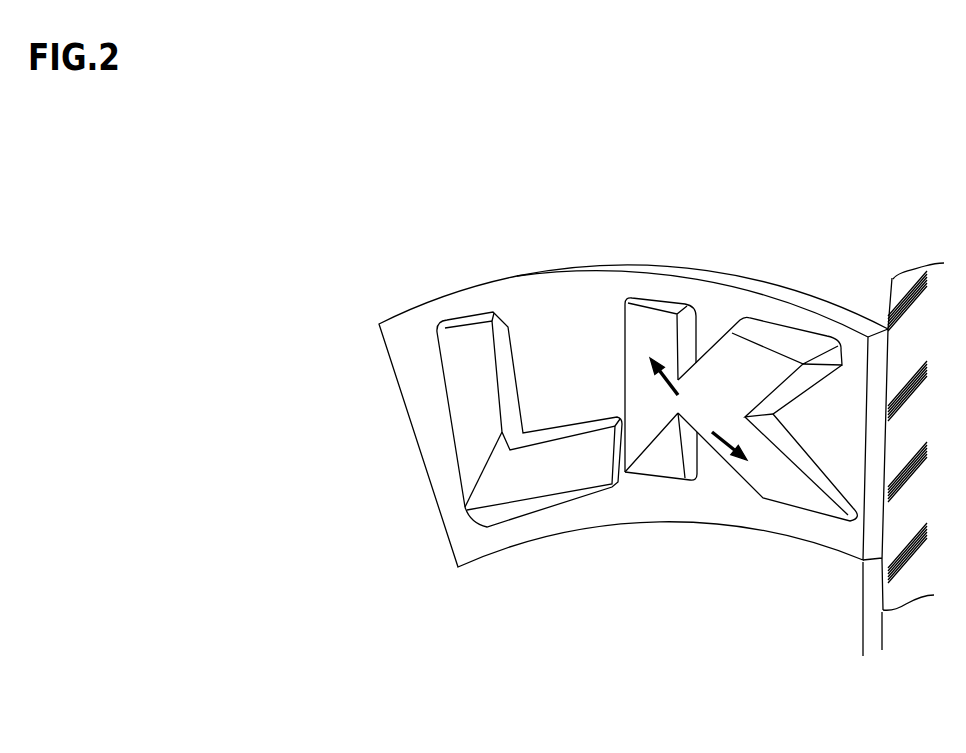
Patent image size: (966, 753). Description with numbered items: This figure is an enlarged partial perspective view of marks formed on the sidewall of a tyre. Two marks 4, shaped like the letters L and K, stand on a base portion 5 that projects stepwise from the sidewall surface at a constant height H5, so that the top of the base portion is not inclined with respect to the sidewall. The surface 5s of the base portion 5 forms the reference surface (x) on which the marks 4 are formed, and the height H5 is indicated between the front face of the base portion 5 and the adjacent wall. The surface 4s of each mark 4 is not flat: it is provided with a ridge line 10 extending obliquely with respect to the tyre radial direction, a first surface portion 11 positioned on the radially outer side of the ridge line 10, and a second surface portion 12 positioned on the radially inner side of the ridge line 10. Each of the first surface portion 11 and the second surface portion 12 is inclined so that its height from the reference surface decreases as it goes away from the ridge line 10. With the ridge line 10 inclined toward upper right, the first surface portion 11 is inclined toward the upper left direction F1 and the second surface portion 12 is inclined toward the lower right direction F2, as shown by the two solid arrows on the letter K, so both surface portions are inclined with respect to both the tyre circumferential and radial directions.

The mark 4 is at (646, 419).
The surface of the mark 4s is at (470, 358).
The base portion 5 is at (633, 380).
The surface of the base portion 5s is at (623, 380).
The ridge line 10 is at (731, 406).
The first surface portion 11 is at (652, 332).
The second surface portion 12 is at (765, 472).
The upper left direction F1 is at (679, 346).
The lower right direction F2 is at (726, 428).
The height of the base portion H5 is at (912, 634).